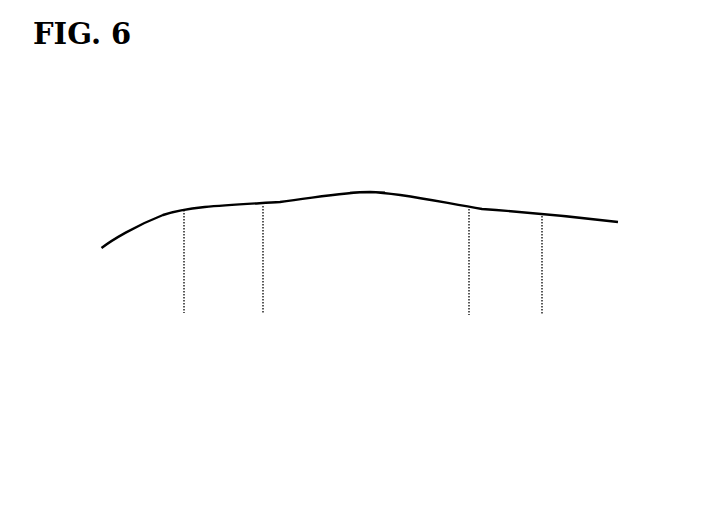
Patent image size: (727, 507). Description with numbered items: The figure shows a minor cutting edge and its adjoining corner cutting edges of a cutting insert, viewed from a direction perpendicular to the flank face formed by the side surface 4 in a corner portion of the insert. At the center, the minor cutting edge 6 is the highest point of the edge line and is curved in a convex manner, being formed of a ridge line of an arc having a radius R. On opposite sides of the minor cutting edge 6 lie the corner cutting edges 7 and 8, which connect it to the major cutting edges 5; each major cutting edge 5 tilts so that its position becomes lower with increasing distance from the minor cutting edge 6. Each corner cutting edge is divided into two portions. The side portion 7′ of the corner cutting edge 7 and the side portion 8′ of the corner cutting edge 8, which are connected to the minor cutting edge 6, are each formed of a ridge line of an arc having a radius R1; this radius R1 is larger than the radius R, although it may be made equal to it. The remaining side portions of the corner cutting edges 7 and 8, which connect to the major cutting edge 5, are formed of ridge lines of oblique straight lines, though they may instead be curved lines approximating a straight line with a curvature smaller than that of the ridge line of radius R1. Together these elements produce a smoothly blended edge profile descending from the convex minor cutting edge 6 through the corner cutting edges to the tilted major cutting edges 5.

The side surface 4 is at (408, 348).
The major cutting edge 5 is at (583, 215).
The minor cutting edge 6 is at (385, 190).
The corner cutting edge 7 is at (543, 200).
The side portion of corner cutting edge 7′ is at (482, 209).
The corner cutting edge 8 is at (263, 200).
The side portion of corner cutting edge 8′ is at (252, 208).
The radius R is at (363, 193).
The radius R1 is at (252, 208).